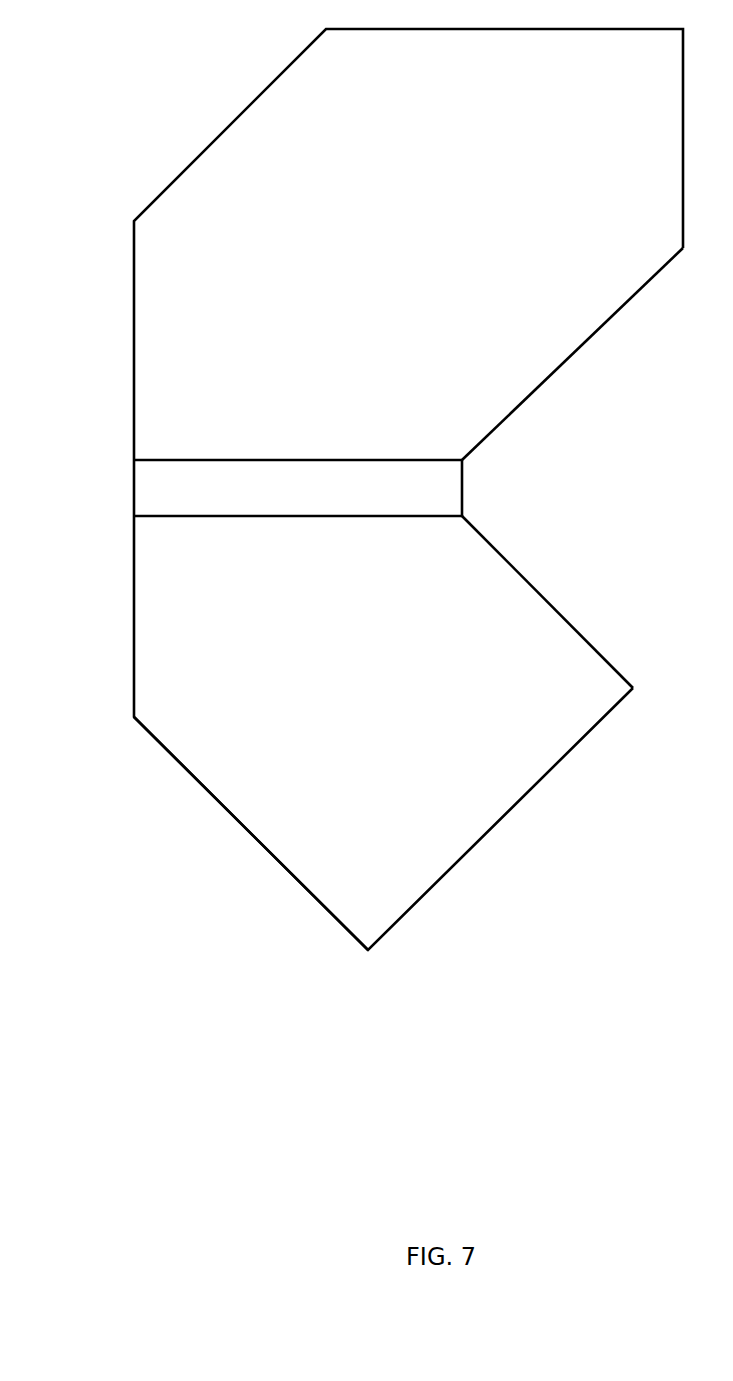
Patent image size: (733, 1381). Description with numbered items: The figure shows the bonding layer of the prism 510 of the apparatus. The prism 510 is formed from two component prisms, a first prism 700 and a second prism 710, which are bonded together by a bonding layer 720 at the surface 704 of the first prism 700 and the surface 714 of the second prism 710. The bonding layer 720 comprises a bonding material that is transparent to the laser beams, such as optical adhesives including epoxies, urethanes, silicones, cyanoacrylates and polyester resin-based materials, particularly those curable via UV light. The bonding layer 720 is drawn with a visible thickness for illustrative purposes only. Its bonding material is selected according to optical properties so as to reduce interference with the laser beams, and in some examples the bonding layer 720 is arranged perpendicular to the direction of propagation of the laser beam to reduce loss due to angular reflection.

The prism 700 is at (242, 142).
The surface 704 is at (363, 455).
The prism 710 is at (167, 667).
The surface 714 is at (373, 515).
The bonding layer 720 is at (158, 480).
The prism 510 is at (260, 860).